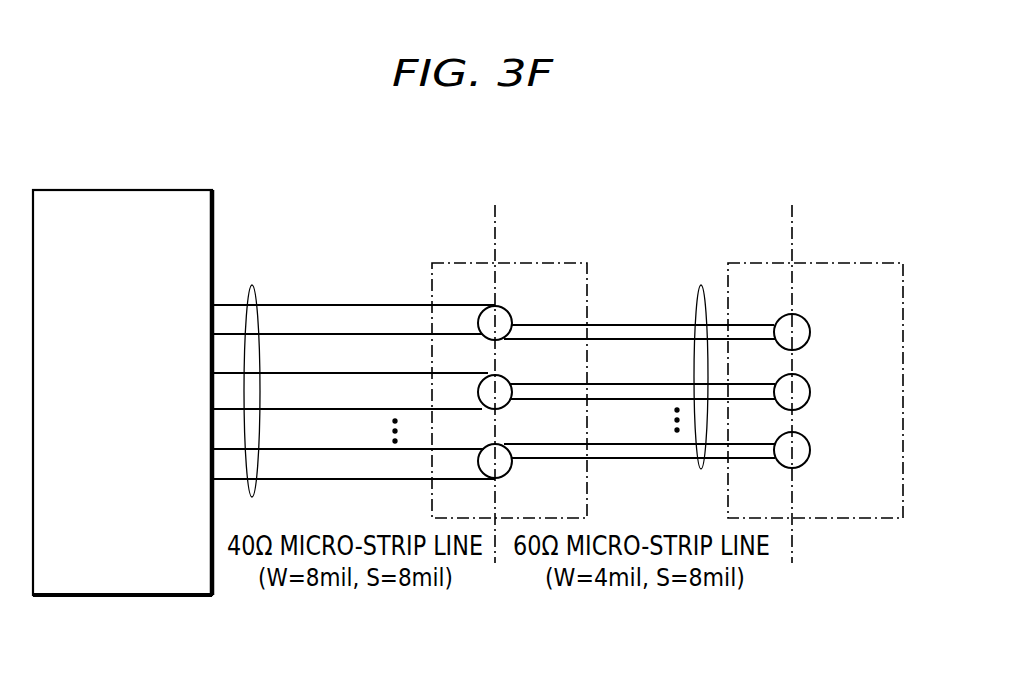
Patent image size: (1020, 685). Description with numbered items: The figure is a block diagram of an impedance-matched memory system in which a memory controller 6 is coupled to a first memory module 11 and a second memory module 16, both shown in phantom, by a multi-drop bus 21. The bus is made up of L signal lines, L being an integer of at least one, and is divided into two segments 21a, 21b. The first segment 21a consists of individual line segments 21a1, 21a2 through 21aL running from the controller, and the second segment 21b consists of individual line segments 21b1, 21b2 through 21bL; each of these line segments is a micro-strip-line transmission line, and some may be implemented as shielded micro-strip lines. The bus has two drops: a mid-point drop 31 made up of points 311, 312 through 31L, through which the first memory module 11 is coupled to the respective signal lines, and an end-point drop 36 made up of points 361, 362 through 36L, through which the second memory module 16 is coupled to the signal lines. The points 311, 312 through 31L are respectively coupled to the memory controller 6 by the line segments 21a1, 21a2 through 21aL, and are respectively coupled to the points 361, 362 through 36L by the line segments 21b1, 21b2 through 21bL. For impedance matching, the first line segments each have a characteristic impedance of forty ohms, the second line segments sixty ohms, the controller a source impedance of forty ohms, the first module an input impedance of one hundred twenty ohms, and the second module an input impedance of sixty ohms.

The memory controller 6 is at (120, 190).
The multi-drop bus 21 is at (325, 243).
The bus segment 21a is at (252, 285).
The line segment 21a1 is at (330, 289).
The line segment 21a2 is at (330, 359).
The line segment 21aL is at (330, 434).
The bus segment 21b is at (705, 277).
The line segment 21b1 is at (640, 310).
The line segment 21b2 is at (640, 369).
The line segment 21bL is at (640, 431).
The first memory module 11 is at (522, 262).
The mid-point drop 31 is at (495, 563).
The point 311 is at (512, 318).
The point 312 is at (506, 379).
The point 31L is at (509, 472).
The second memory module 16 is at (848, 262).
The end-point drop 36 is at (792, 563).
The point 361 is at (810, 336).
The point 362 is at (810, 395).
The point 36L is at (810, 453).